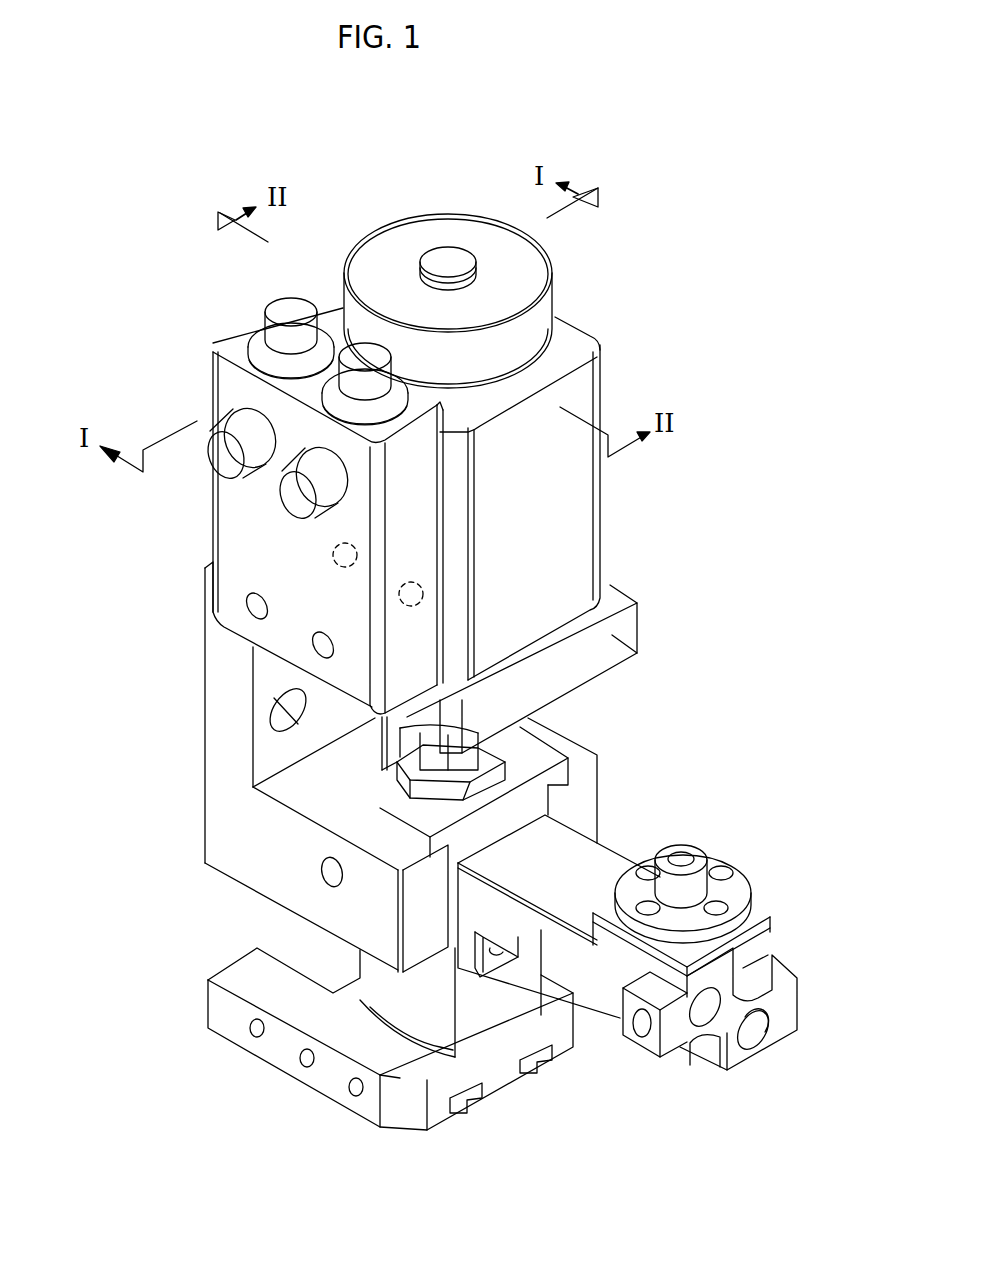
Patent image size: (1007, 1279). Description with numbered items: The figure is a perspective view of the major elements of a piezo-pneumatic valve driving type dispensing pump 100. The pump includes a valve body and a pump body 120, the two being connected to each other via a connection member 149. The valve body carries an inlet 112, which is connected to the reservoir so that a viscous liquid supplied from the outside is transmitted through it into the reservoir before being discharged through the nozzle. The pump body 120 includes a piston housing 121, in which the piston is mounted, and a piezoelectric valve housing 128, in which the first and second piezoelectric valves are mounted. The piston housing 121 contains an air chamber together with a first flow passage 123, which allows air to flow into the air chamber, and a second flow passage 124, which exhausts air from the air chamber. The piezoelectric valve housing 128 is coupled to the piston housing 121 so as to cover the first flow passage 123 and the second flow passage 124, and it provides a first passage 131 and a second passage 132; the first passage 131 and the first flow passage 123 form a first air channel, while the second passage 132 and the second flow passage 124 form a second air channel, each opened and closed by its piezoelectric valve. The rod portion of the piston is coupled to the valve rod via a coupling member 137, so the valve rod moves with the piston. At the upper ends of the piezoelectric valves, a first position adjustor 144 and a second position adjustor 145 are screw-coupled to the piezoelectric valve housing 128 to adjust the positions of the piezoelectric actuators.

The piezo-pneumatic valve driving type dispensing pump 100 is at (768, 861).
The inlet 112 is at (685, 855).
The pump body 120 is at (623, 320).
The piston housing 121 is at (597, 397).
The first flow passage 123 is at (333, 556).
The second flow passage 124 is at (420, 596).
The piezoelectric valve housing 128 is at (343, 678).
The first passage 131 is at (248, 606).
The second passage 132 is at (318, 646).
The coupling member 137 is at (490, 740).
The first position adjustor 144 is at (293, 305).
The second position adjustor 145 is at (368, 350).
The connection member 149 is at (215, 748).